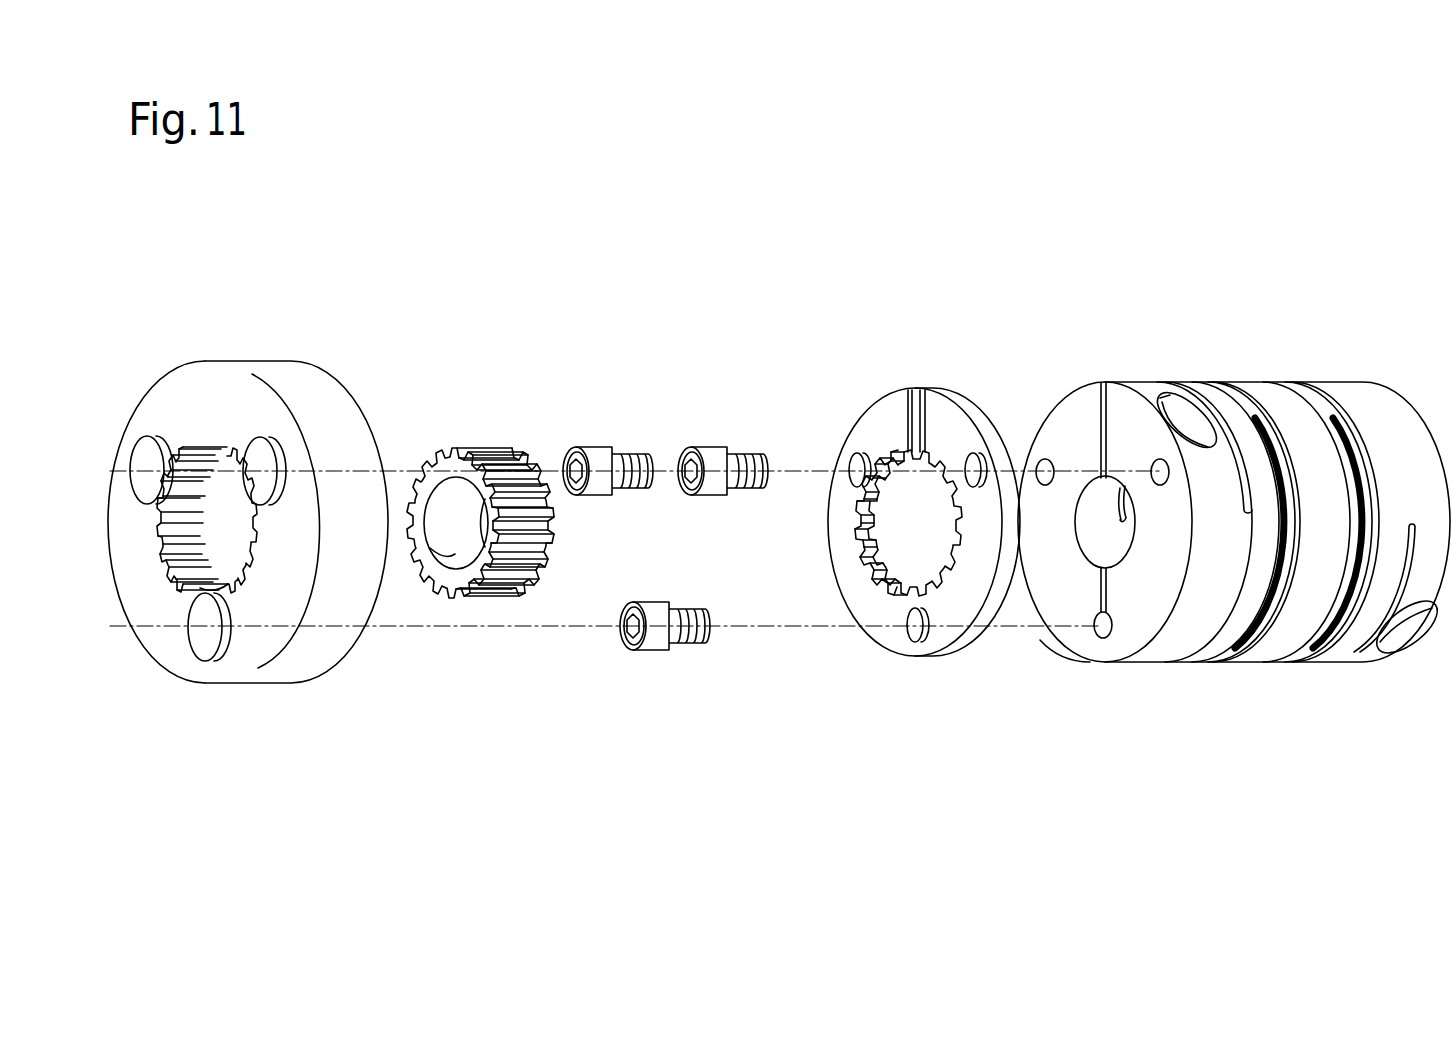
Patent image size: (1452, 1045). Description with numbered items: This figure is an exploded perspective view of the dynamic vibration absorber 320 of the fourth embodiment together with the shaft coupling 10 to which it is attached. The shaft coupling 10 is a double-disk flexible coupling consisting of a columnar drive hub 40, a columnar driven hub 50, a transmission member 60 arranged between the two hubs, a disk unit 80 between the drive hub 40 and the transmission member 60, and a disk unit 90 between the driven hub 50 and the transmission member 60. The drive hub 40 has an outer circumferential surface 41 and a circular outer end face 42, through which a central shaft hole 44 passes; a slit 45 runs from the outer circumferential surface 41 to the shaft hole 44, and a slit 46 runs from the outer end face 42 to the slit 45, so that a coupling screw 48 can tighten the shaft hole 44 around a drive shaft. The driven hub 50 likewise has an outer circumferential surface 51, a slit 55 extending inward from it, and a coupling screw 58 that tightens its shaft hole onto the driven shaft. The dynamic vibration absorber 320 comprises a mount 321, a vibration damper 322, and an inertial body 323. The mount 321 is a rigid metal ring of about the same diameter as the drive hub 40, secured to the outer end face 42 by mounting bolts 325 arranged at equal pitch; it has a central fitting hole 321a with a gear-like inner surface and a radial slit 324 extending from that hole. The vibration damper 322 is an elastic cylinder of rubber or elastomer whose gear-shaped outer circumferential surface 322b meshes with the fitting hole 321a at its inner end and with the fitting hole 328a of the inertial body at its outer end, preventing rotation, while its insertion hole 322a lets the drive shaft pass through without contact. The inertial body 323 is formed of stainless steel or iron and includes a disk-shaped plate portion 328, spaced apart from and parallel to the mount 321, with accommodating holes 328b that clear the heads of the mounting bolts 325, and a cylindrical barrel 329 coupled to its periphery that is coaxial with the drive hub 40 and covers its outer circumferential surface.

The shaft coupling 10 is at (1370, 727).
The drive hub 40 is at (1180, 658).
The outer circumferential surface 41 is at (1213, 393).
The outer end face 42 is at (1080, 652).
The shaft hole 44 is at (1085, 545).
The slit 45 is at (1122, 500).
The slit 46 is at (1103, 390).
The coupling screw 48 is at (1170, 393).
The driven hub 50 is at (1360, 658).
The outer circumferential surface 51 is at (1360, 393).
The slit 55 is at (1400, 556).
The coupling screw 58 is at (1395, 646).
The transmission member 60 is at (1248, 658).
The disk unit 80 is at (1287, 463).
The disk unit 90 is at (1363, 473).
The dynamic vibration absorber 320 is at (985, 314).
The mount 321 is at (966, 403).
The fitting hole 321a is at (866, 552).
The vibration damper 322 is at (466, 444).
The insertion hole 322a is at (431, 585).
The outer circumferential surface 322b is at (535, 530).
The inertial body 323 is at (274, 374).
The slit 324 is at (913, 403).
The mounting bolts 325 is at (597, 453).
The plate portion 328 is at (205, 425).
The fitting hole 328a is at (220, 584).
The accommodating holes 328b is at (143, 445).
The barrel 329 is at (345, 645).